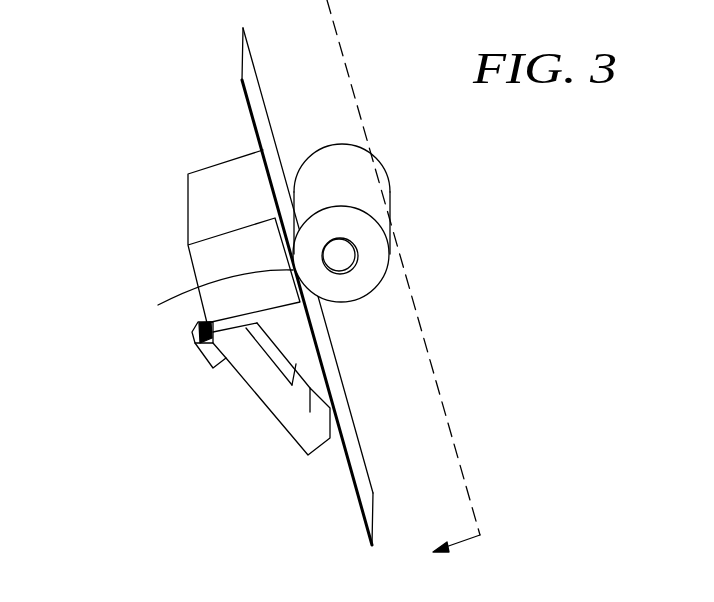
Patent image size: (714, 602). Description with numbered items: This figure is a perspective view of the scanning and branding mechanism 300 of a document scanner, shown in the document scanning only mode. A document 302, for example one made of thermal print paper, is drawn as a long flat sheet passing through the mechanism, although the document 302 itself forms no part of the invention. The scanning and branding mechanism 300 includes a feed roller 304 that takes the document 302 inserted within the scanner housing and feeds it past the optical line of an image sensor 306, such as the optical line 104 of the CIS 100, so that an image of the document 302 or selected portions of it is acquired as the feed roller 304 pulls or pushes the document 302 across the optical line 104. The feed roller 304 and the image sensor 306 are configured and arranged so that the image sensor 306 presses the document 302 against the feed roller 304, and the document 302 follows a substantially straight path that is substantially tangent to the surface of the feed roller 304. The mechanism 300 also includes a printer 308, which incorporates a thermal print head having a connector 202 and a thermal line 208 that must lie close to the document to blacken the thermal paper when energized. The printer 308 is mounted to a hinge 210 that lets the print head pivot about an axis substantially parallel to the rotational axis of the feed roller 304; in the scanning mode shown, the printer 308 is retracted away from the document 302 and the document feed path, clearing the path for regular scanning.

The scanning and branding mechanism 300 is at (80, 208).
The document 302 is at (247, 66).
The feed roller 304 is at (343, 292).
The image sensor 306 is at (181, 140).
The CIS 100 is at (200, 215).
The optical line 104 is at (207, 293).
The connector 202 is at (195, 343).
The hinge 210 is at (242, 337).
The thermal line 208 is at (311, 410).
The printer 308 is at (274, 462).